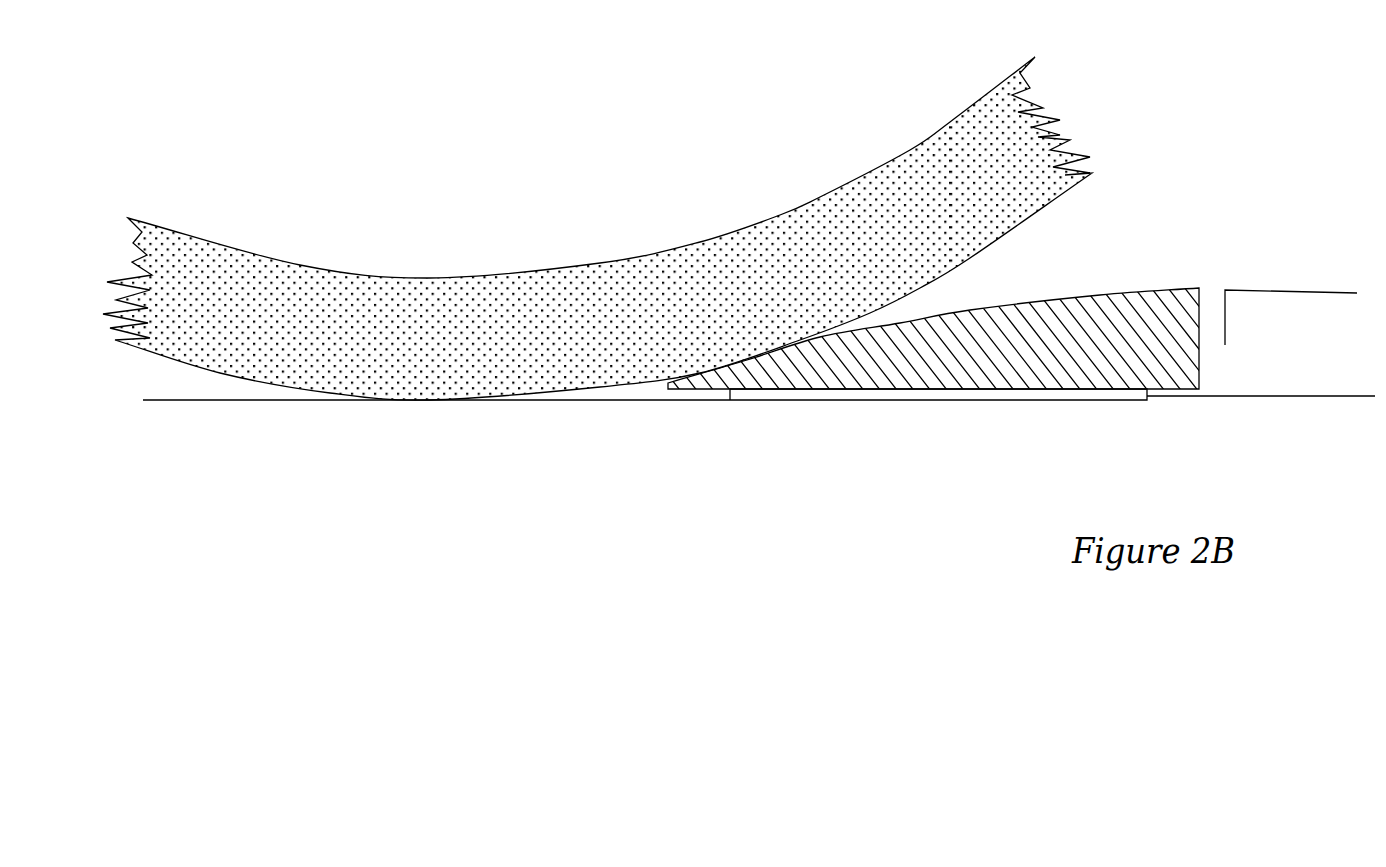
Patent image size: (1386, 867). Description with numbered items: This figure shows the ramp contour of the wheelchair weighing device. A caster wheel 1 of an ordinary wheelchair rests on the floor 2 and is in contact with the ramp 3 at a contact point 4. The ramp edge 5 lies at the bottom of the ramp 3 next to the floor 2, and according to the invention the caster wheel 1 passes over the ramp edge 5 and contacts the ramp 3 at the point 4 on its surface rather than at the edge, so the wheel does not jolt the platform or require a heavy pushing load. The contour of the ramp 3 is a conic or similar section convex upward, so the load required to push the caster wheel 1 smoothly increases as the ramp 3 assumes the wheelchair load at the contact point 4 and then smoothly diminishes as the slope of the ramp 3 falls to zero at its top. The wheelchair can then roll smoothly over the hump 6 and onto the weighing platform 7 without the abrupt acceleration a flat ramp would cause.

The caster wheel 1 is at (350, 290).
The floor 2 is at (1278, 398).
The ramp 3 is at (1123, 290).
The contact point 4 is at (748, 326).
The ramp edge 5 is at (648, 404).
The hump 6 is at (1242, 278).
The weighing platform 7 is at (1288, 291).